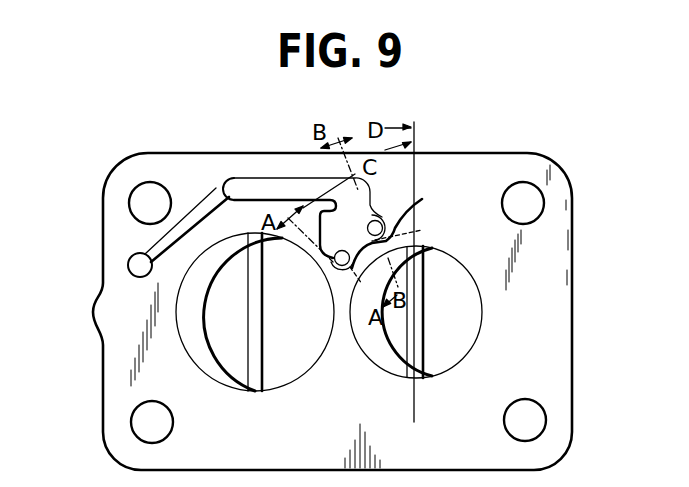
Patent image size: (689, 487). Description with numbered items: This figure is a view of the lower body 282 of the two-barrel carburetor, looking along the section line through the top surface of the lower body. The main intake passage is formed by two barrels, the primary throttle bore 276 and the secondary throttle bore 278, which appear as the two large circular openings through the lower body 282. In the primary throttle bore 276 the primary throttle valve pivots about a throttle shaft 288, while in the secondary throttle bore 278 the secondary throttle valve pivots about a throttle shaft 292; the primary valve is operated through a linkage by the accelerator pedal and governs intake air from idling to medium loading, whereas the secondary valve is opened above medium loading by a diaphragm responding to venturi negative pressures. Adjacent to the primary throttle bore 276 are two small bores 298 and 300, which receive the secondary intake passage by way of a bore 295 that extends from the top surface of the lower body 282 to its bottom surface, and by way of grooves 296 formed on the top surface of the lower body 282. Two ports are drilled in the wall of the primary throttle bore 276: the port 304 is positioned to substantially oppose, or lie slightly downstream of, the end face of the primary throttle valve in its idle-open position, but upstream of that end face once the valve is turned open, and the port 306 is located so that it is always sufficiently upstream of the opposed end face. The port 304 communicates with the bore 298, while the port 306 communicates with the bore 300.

The primary throttle bore 276 is at (436, 375).
The secondary throttle bore 278 is at (282, 385).
The lower body 282 is at (547, 162).
The throttle shaft 288 is at (423, 304).
The throttle shaft 292 is at (247, 311).
The bore 295 is at (128, 260).
The grooves 296 is at (206, 189).
The bore 298 is at (330, 266).
The bore 300 is at (411, 204).
The port 304 is at (342, 293).
The port 306 is at (413, 231).